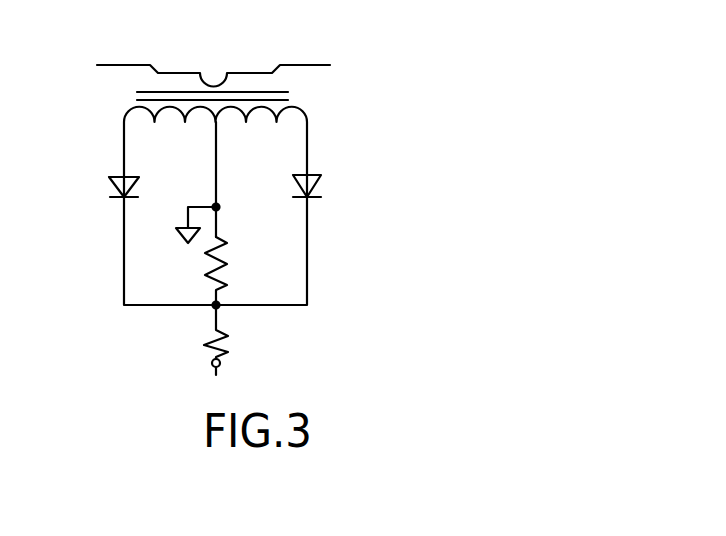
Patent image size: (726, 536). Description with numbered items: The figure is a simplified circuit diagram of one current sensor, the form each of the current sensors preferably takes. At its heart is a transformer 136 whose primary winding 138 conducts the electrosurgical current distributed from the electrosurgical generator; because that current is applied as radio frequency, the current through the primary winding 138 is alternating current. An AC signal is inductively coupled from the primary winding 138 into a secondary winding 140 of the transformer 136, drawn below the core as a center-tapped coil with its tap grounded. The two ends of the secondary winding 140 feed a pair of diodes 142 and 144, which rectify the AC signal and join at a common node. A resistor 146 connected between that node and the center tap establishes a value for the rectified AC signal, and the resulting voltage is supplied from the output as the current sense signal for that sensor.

The primary winding 138 is at (233, 74).
The transformer 136 is at (322, 92).
The diode 142 is at (110, 190).
The diode 144 is at (318, 182).
The secondary winding 140 is at (246, 123).
The resistor 146 is at (227, 249).